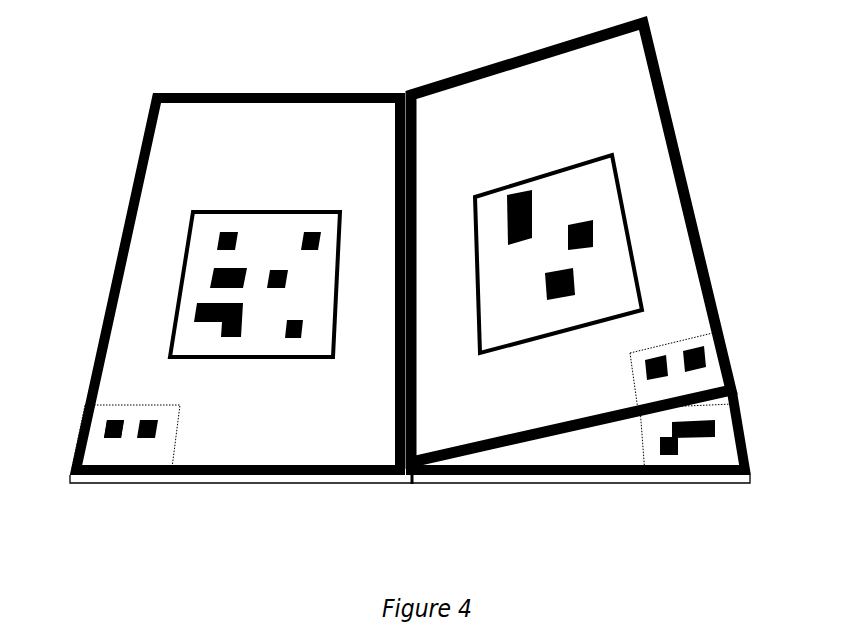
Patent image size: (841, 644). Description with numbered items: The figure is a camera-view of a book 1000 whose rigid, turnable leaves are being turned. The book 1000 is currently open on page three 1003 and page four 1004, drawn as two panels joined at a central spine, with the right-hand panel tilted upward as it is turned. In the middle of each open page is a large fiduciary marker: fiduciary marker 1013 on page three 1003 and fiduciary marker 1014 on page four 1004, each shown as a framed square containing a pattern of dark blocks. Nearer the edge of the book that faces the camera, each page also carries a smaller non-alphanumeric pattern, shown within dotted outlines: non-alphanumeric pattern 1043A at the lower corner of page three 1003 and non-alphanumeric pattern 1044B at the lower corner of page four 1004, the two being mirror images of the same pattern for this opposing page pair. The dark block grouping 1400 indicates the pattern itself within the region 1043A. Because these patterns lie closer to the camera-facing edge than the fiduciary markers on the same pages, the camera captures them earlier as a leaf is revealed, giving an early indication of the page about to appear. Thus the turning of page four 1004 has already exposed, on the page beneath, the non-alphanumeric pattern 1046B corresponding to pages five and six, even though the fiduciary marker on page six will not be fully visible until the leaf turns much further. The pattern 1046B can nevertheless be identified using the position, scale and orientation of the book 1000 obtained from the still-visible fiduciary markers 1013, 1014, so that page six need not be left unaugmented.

The book 1000 is at (247, 524).
The page 3 1003 is at (238, 284).
The page 4 1004 is at (578, 246).
The fiduciary marker 1013 is at (170, 252).
The fiduciary marker 1014 is at (640, 202).
The non-alphanumeric pattern 1043A is at (96, 422).
The marker pattern 1400 is at (190, 417).
The non-alphanumeric pattern 1044B is at (713, 369).
The non-alphanumeric pattern 1046B is at (720, 445).